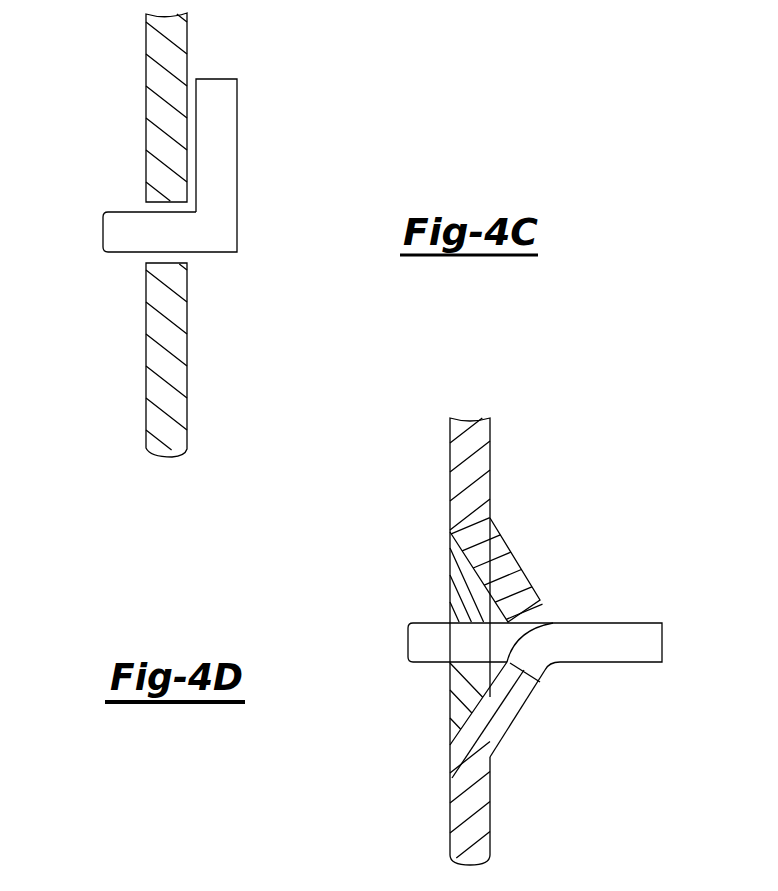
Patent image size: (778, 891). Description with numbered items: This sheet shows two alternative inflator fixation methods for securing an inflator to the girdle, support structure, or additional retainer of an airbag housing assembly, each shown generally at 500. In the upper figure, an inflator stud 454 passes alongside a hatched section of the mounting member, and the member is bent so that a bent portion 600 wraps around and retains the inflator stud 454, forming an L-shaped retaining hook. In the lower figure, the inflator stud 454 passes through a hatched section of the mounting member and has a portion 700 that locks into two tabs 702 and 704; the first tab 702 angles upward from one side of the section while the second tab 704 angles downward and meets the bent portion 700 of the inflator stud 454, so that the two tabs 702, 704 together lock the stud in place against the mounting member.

In FIG. 4C, the inflator fixation method 500 is at (187, 58).
In FIG. 4D, the inflator fixation method 500 is at (490, 458).
In FIG. 4C, the inflator stud 454 is at (111, 212).
In FIG. 4D, the inflator stud 454 is at (432, 620).
In FIG. 4C, the bent portion 600 is at (237, 183).
In FIG. 4D, the locking portion 700 is at (627, 663).
In FIG. 4D, the tab 702 is at (513, 553).
In FIG. 4D, the tab 704 is at (498, 750).